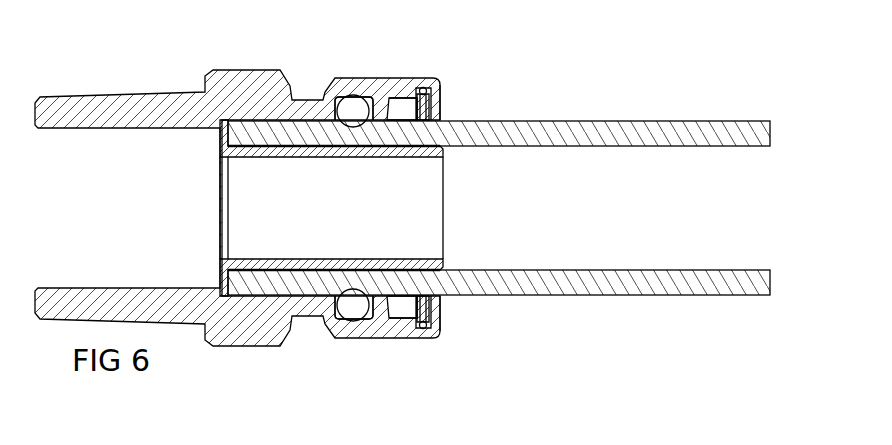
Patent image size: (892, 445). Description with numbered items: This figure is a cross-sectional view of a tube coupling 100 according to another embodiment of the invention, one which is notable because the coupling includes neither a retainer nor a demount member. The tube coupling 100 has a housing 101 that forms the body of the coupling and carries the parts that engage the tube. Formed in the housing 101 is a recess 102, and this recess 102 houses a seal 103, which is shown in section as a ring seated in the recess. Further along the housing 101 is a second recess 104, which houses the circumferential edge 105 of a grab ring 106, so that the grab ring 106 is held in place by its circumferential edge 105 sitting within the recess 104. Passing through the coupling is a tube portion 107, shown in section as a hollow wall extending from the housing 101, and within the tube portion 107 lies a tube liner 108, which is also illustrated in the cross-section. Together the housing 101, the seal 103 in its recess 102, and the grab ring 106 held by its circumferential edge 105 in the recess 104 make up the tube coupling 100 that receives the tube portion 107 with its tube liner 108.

The tube coupling 100 is at (664, 51).
The housing 101 is at (307, 100).
The recess 102 is at (354, 108).
The seal 103 is at (350, 106).
The recess 104 is at (422, 91).
The circumferential edge 105 is at (428, 99).
The grab ring 106 is at (440, 112).
The tube portion 107 is at (676, 284).
The tube liner 108 is at (268, 267).